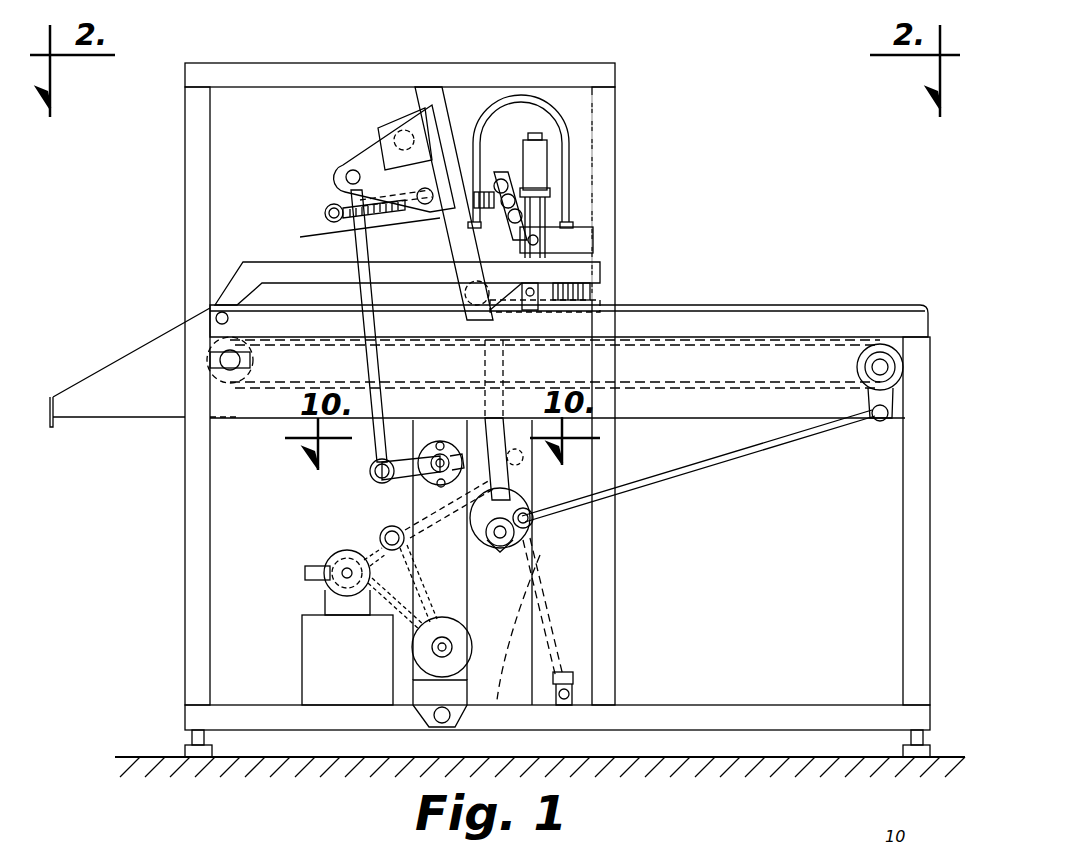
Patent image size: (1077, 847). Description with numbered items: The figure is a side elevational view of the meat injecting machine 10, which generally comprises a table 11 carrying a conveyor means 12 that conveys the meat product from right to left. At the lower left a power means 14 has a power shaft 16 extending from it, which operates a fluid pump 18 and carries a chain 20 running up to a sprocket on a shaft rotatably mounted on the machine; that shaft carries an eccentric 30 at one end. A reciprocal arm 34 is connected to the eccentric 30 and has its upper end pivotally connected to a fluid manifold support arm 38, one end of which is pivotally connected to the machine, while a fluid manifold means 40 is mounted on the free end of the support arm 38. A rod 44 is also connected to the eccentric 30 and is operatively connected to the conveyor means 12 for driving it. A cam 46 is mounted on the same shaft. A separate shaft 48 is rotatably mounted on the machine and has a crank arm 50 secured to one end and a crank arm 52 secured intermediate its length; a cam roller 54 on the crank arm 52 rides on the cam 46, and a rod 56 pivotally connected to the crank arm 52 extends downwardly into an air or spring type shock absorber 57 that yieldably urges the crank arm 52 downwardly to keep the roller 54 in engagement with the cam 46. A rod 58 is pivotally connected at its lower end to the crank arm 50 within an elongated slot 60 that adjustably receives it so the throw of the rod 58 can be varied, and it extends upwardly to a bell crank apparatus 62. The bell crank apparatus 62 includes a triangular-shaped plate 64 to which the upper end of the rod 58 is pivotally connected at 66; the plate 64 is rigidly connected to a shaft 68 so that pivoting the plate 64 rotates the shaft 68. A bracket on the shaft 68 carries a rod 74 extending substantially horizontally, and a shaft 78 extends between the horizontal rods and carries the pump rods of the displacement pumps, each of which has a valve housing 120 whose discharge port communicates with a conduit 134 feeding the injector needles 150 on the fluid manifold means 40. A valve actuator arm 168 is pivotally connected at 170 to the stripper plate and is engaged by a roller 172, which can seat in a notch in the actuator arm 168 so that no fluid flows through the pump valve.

The machine 10 is at (755, 172).
The table 11 is at (838, 305).
The conveyor means 12 is at (885, 338).
The power means 14 is at (470, 652).
The power shaft 16 is at (315, 578).
The fluid pump 18 is at (340, 565).
The chain 20 is at (437, 575).
The eccentric 30 is at (520, 500).
The reciprocal arm 34 is at (495, 378).
The fluid manifold support arm 38 is at (270, 275).
The fluid manifold means 40 is at (580, 237).
The rod 44 is at (740, 460).
The cam 46 is at (503, 598).
The shaft 48 is at (440, 442).
The crank arm 50 is at (420, 485).
The crank arm 52 is at (486, 390).
The cam roller 54 is at (515, 447).
The rod 56 is at (530, 478).
The shock absorber 57 is at (548, 575).
The rod 58 is at (372, 471).
The elongated slot 60 is at (395, 462).
The bell crank apparatus 62 is at (369, 271).
The triangular-shaped plate 64 is at (372, 168).
The pivot connection 66 is at (345, 177).
The shaft 68 is at (400, 120).
The rod 74 is at (375, 220).
The shaft 78 is at (325, 213).
The valve housing 120 is at (506, 226).
The conduit 134 is at (537, 97).
The injector needles 150 is at (590, 288).
The valve actuator arm 168 is at (493, 155).
The pivot connection 170 is at (530, 298).
The roller 172 is at (538, 235).